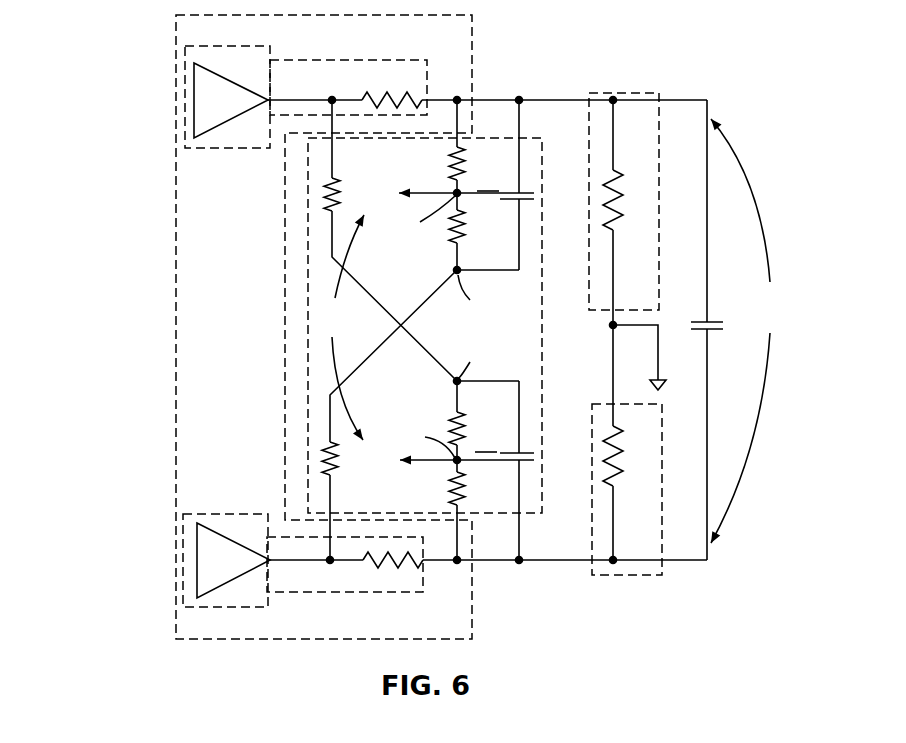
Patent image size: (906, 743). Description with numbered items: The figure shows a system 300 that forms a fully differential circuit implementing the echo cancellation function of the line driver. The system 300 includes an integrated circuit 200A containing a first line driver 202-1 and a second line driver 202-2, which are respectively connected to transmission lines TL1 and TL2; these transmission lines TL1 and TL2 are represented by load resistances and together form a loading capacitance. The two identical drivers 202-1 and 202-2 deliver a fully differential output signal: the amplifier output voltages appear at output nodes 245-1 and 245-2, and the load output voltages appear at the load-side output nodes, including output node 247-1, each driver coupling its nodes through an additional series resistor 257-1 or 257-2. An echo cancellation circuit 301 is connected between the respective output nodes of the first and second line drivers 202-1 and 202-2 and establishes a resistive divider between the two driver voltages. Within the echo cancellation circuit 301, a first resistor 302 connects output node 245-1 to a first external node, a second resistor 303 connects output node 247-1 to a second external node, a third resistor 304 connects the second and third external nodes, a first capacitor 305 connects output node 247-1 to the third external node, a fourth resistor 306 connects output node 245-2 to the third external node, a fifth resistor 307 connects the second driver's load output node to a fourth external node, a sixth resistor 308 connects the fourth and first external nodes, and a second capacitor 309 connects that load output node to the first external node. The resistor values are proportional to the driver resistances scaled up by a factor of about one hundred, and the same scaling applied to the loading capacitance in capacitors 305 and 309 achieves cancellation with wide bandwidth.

The system 300 is at (125, 85).
The integrated circuit 200A is at (173, 235).
The first line driver 202-1 is at (252, 154).
The second line driver 202-2 is at (231, 510).
The output node 245-1 is at (332, 98).
The output node 245-2 is at (331, 563).
The series resistor 257-1 is at (383, 78).
The series resistor 257-2 is at (380, 577).
The output node 247-1 is at (455, 97).
The echo cancellation circuit 301 is at (538, 135).
The first resistor 302 is at (320, 220).
The second resistor 303 is at (446, 171).
The third resistor 304 is at (446, 247).
The first capacitor 305 is at (537, 197).
The fourth resistor 306 is at (320, 443).
The fifth resistor 307 is at (446, 478).
The sixth resistor 308 is at (446, 413).
The second capacitor 309 is at (537, 457).
The transmission line TL1 is at (642, 90).
The transmission line TL2 is at (638, 580).